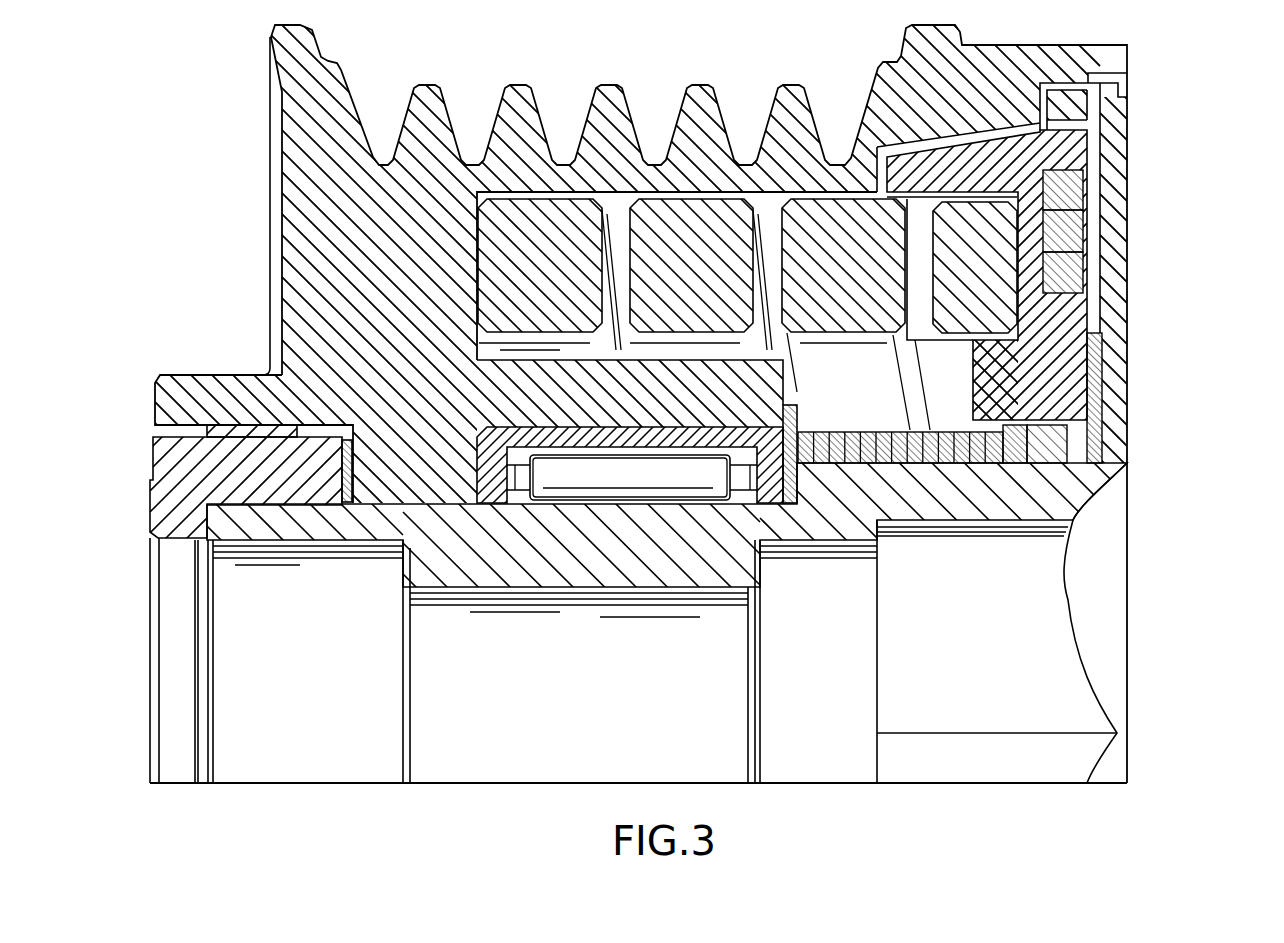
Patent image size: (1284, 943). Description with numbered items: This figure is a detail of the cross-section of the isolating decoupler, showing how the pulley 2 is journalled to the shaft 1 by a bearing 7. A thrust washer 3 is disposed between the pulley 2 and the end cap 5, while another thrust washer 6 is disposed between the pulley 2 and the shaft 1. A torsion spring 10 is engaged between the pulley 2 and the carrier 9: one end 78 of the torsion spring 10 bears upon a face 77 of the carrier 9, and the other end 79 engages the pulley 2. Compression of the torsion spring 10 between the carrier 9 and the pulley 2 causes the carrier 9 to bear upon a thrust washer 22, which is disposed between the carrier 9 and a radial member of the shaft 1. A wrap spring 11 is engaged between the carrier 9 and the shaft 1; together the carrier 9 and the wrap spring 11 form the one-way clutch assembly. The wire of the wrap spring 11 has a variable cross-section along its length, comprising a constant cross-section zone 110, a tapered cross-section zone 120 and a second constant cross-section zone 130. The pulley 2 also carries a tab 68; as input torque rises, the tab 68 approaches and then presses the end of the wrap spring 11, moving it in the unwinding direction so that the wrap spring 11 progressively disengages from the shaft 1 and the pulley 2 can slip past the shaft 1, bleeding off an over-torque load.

The shaft 1 is at (1127, 575).
The pulley 2 is at (272, 252).
The thrust washer 3 is at (342, 473).
The end cap 5 is at (150, 505).
The thrust washer 6 is at (797, 478).
The bearing 7 is at (643, 483).
The carrier 9 is at (1003, 173).
The torsion spring 10 is at (510, 245).
The wrap spring 11 is at (1070, 235).
The thrust washer 22 is at (1093, 367).
The tab 68 is at (780, 417).
The face 77 is at (917, 220).
The end 78 is at (987, 294).
The end 79 is at (565, 250).
The constant cross-section zone 110 is at (867, 426).
The tapered cross-section zone 120 is at (1013, 463).
The constant cross-section zone 130 is at (1070, 195).